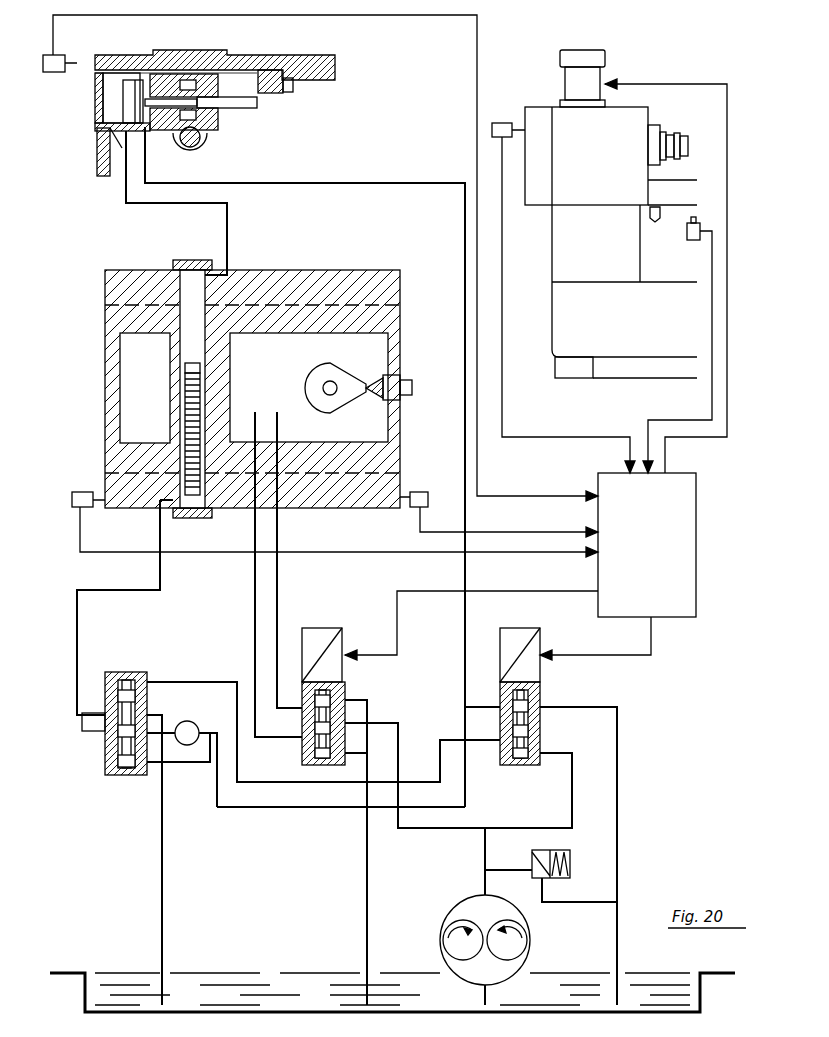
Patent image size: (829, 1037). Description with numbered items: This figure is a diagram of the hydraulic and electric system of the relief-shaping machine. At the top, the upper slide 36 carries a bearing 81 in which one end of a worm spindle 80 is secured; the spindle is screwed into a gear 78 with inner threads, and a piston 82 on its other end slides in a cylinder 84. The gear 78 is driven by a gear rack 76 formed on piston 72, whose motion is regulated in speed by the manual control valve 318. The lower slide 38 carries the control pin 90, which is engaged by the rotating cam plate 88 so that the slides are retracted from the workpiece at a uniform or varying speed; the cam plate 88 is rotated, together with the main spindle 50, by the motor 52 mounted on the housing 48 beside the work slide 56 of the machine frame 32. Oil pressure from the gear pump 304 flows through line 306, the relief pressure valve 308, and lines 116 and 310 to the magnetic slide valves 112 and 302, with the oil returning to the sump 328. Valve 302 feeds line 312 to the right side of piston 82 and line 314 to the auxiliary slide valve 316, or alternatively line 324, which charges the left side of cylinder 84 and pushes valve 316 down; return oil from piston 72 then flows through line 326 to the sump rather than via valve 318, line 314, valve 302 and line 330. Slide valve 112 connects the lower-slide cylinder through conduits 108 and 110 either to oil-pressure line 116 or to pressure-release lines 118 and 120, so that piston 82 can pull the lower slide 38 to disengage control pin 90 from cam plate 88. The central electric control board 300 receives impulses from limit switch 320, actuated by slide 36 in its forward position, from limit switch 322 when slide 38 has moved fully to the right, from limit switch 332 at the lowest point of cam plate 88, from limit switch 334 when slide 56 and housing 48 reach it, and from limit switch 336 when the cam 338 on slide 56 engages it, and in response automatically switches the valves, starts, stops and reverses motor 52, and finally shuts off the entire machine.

The machine frame/column 32 is at (568, 318).
The upper slide 36 is at (300, 66).
The lower slide 38 is at (100, 158).
The housing 48 is at (600, 152).
The main spindle 50 is at (678, 136).
The motor 52 is at (582, 56).
The work slide 56 is at (668, 190).
The piston 72 is at (196, 143).
The gear rack 76 is at (187, 392).
The gear 78 is at (214, 116).
The worm spindle 80 is at (228, 102).
The bearing 81 is at (266, 75).
The piston 82 is at (130, 97).
The cylinder 84 is at (108, 88).
The cam plate 88 is at (334, 366).
The control pin 90 is at (376, 382).
The conduit 108 is at (252, 563).
The conduit 110 is at (279, 562).
The slide valve 112 is at (322, 638).
The oil-pressure line 116 is at (400, 722).
The pressure-release line 118 is at (365, 700).
The pressure-release line 120 is at (362, 753).
The central electric control board 300 is at (690, 500).
The magnetic slide valve 302 is at (522, 638).
The gear pump 304 is at (448, 958).
The line 306 is at (480, 876).
The relief pressure valve 308 is at (540, 862).
The line 310 is at (573, 803).
The line 312 is at (472, 560).
The line 314 is at (254, 810).
The auxiliary slide valve 316 is at (125, 748).
The control valve 318 is at (196, 718).
The limit switch 320 is at (52, 72).
The limit switch 322 is at (420, 494).
The line 324 is at (180, 682).
The line 326 is at (160, 826).
The reservoir 328 is at (292, 1000).
The line 330 is at (619, 803).
The limit switch 332 is at (80, 494).
The limit switch 334 is at (502, 126).
The limit switch 336 is at (688, 236).
The cam 338 is at (650, 214).